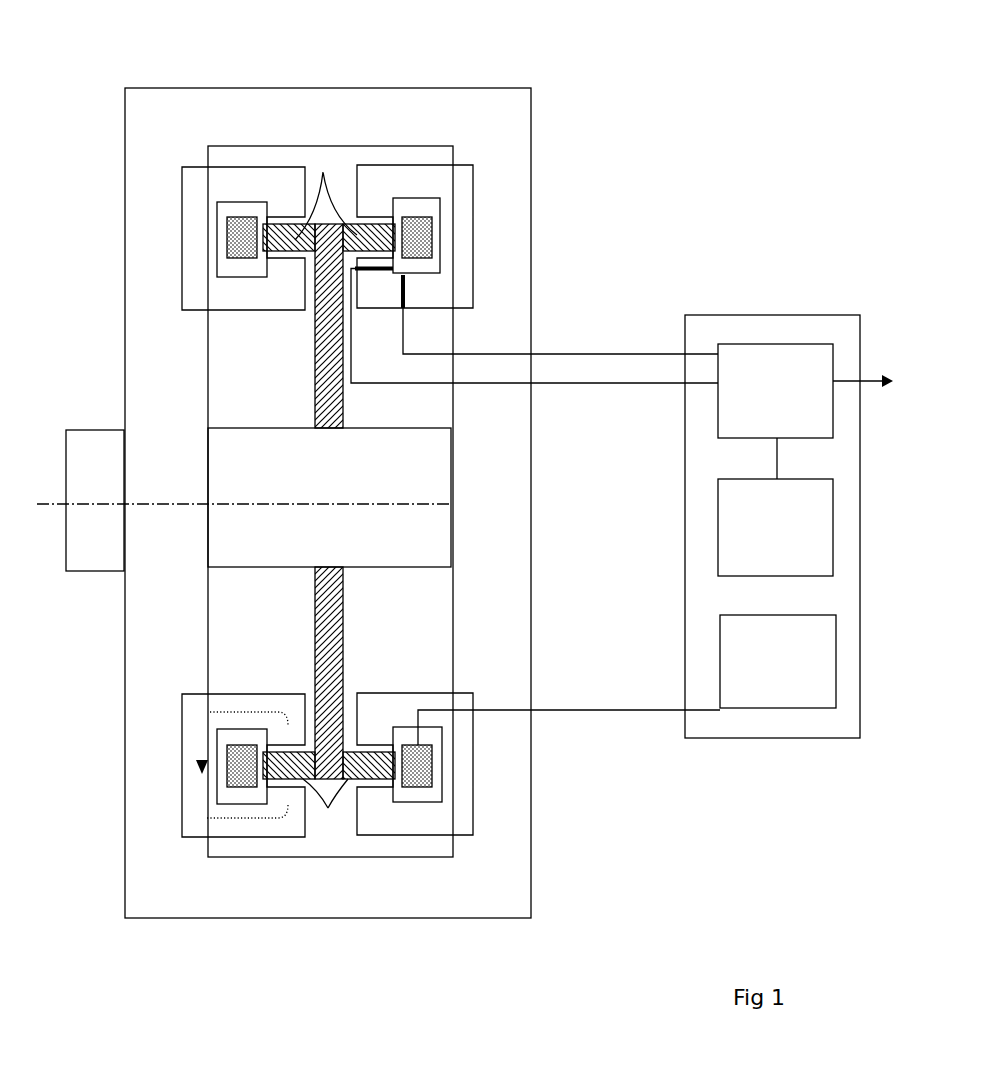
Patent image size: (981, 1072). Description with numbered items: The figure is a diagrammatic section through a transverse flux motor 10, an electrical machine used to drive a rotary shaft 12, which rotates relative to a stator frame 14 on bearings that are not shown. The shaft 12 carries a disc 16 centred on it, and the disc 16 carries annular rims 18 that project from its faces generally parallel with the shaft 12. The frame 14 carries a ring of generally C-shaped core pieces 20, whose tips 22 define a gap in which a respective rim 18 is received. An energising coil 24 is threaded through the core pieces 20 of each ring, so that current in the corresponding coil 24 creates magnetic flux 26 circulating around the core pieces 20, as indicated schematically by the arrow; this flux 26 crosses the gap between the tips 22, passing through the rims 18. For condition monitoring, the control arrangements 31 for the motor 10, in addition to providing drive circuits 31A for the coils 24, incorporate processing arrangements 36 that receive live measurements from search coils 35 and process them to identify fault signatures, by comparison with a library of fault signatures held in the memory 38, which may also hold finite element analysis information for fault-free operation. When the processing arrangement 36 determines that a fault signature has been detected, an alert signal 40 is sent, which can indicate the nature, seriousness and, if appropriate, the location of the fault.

The motor 10 is at (378, 56).
The rotary shaft 12 is at (83, 546).
The stator frame 14 is at (128, 725).
The disc 16 is at (330, 602).
The annular rims 18 is at (323, 172).
The core pieces 20 is at (197, 208).
The tips 22 is at (372, 208).
The energising coil 24 is at (417, 235).
The magnetic flux 26 is at (202, 789).
The control arrangements 31 is at (860, 708).
The drive circuits 31A is at (778, 661).
The search coils 35 is at (377, 272).
The processing arrangements 36 is at (775, 391).
The memory 38 is at (775, 527).
The alert signal 40 is at (842, 377).